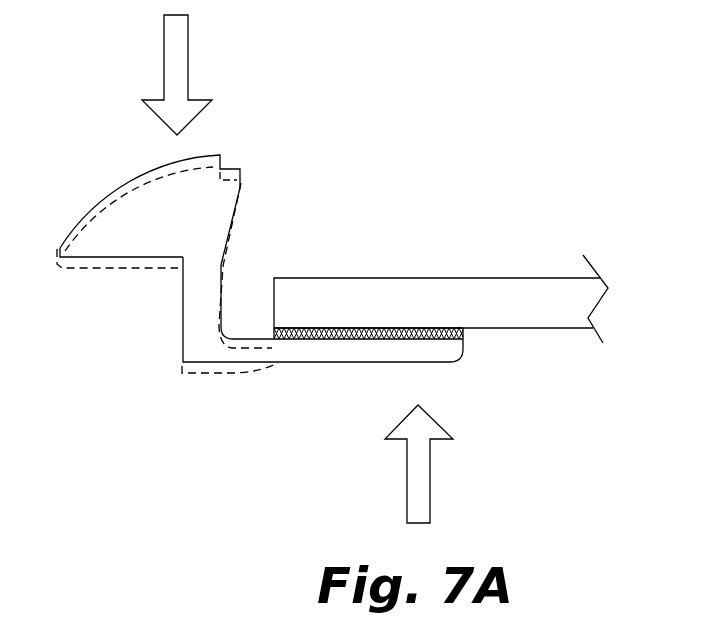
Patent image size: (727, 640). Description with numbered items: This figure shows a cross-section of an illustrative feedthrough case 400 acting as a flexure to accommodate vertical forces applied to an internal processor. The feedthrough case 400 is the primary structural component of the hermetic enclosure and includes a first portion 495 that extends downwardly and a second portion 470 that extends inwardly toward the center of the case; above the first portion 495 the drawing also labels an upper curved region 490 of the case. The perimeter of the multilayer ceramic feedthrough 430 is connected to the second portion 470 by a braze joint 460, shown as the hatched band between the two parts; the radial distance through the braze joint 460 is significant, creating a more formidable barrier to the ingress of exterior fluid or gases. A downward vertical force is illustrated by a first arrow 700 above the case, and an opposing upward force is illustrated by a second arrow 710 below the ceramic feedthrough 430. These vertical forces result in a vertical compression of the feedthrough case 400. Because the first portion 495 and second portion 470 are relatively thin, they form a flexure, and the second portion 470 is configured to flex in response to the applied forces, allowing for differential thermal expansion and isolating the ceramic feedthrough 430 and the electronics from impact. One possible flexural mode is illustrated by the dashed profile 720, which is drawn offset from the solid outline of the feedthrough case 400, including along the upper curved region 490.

The feedthrough case 400 is at (277, 112).
The multilayer ceramic feedthrough 430 is at (463, 293).
The braze joint 460 is at (465, 333).
The second portion 470 is at (353, 350).
The curved lip of hook 490 is at (152, 192).
The first portion 495 is at (200, 305).
The first arrow 700 is at (168, 75).
The second arrow 710 is at (413, 498).
The dashed profile 720 is at (102, 270).